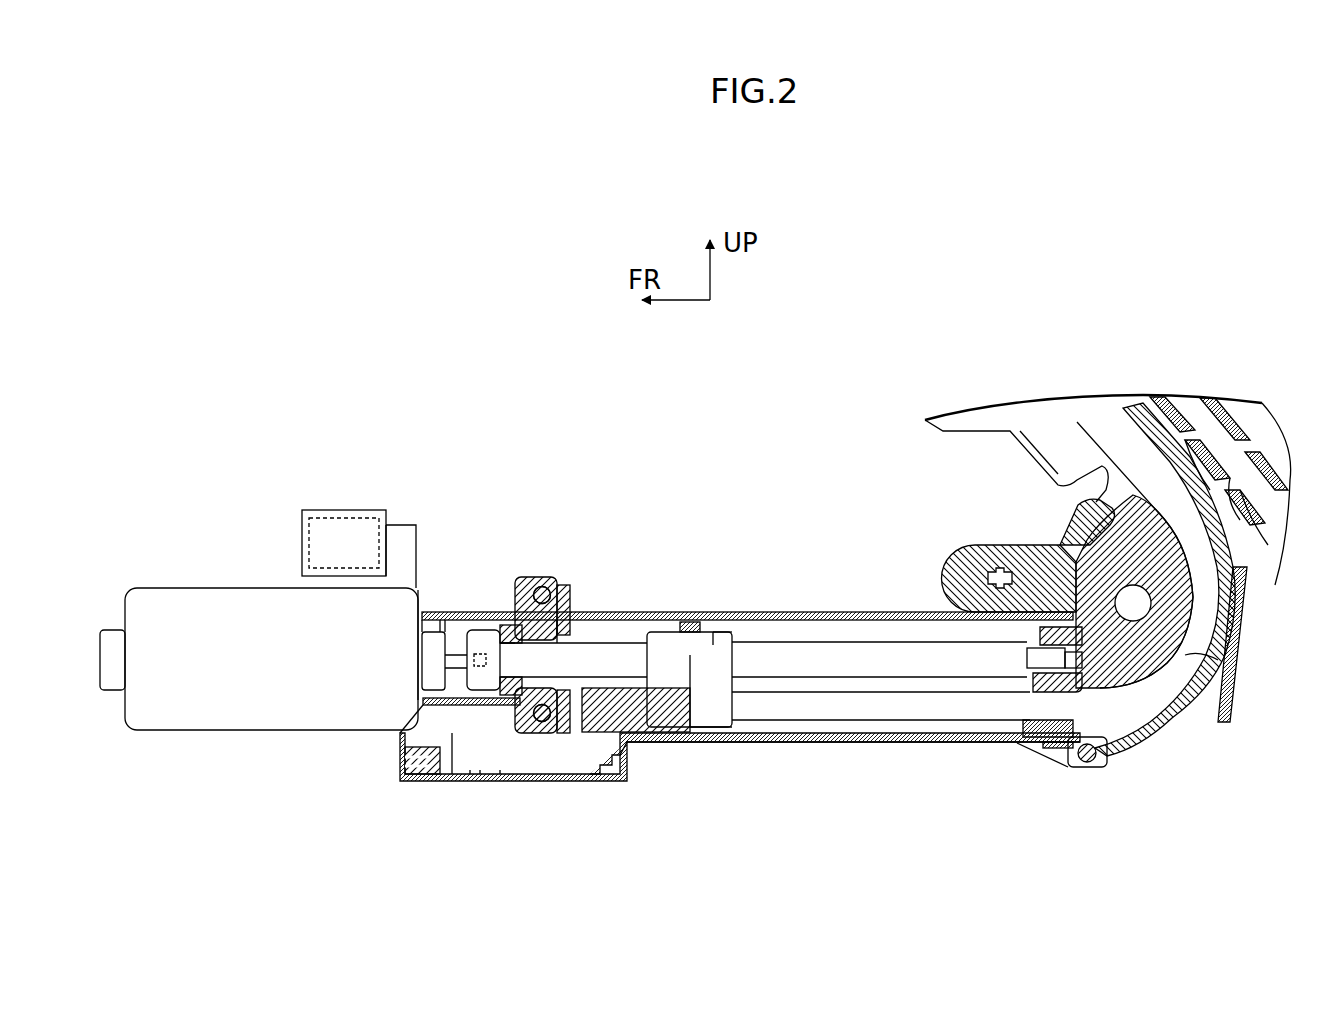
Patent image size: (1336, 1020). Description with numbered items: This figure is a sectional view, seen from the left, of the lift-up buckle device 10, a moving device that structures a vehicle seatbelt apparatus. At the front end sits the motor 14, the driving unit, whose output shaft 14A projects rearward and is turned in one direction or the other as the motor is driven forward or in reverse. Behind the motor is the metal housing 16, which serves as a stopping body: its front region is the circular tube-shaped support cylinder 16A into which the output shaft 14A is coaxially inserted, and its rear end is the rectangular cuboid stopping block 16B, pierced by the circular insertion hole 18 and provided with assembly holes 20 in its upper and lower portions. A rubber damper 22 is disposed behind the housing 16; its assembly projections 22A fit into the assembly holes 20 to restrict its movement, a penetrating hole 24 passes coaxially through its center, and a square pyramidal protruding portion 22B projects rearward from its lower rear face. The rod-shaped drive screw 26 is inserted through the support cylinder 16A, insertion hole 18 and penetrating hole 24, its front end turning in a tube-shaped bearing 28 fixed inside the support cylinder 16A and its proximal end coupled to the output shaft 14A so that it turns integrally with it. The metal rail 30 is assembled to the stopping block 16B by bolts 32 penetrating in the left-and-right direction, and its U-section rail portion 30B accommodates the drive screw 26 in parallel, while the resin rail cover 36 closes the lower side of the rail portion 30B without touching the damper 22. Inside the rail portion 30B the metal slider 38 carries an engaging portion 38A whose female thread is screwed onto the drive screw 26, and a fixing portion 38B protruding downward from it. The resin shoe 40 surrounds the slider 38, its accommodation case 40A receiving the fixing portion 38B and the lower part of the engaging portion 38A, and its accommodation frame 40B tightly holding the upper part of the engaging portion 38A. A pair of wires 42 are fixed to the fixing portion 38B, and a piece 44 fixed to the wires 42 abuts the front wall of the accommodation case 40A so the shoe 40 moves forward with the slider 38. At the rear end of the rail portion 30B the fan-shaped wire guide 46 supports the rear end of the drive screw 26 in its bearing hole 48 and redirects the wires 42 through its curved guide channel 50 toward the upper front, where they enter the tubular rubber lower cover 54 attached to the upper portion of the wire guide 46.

The lift-up buckle device 10 is at (545, 392).
The motor 14 is at (188, 588).
The output shaft 14A is at (452, 738).
The housing 16 is at (433, 612).
The support cylinder 16A is at (457, 612).
The stopping block 16B is at (540, 577).
The insertion hole 18 is at (490, 781).
The assembly hole 20 is at (518, 577).
The damper 22 is at (567, 595).
The assembly projection 22A is at (545, 690).
The protruding portion 22B is at (560, 735).
The penetrating hole 24 is at (575, 640).
The drive screw 26 is at (792, 642).
The bearing 28 is at (490, 630).
The rail 30 is at (845, 612).
The rail portion 30B is at (905, 612).
The bolt 32 is at (550, 586).
The rail cover 36 is at (832, 742).
The slider 38 is at (668, 632).
The engaging portion 38A is at (714, 632).
The fixing portion 38B is at (706, 727).
The shoe 40 is at (745, 742).
The accommodation case 40A is at (612, 772).
The accommodation frame 40B is at (688, 622).
The wire 42 is at (880, 700).
The piece 44 is at (645, 735).
The wire guide 46 is at (1150, 720).
The bearing hole 48 is at (1095, 662).
The guide channel 50 is at (1208, 662).
The lower cover 54 is at (1262, 415).